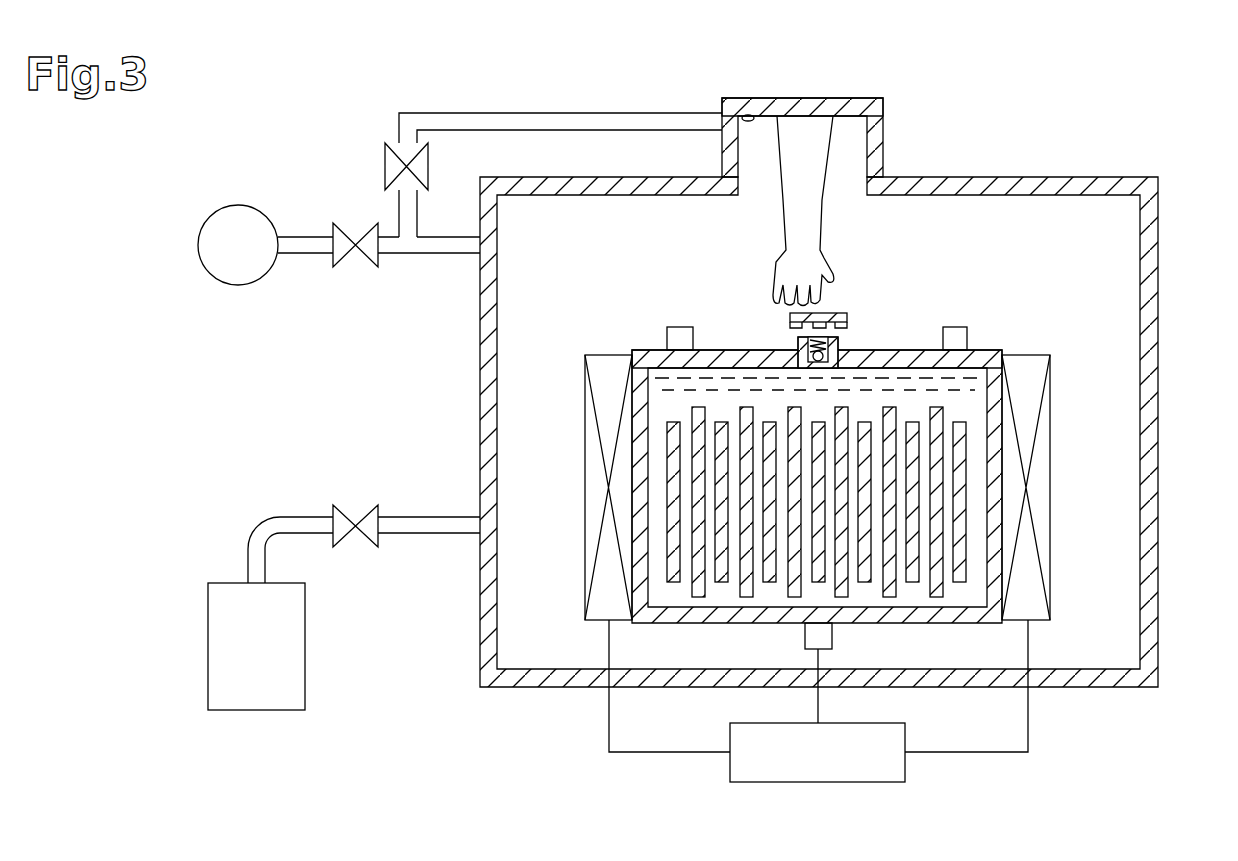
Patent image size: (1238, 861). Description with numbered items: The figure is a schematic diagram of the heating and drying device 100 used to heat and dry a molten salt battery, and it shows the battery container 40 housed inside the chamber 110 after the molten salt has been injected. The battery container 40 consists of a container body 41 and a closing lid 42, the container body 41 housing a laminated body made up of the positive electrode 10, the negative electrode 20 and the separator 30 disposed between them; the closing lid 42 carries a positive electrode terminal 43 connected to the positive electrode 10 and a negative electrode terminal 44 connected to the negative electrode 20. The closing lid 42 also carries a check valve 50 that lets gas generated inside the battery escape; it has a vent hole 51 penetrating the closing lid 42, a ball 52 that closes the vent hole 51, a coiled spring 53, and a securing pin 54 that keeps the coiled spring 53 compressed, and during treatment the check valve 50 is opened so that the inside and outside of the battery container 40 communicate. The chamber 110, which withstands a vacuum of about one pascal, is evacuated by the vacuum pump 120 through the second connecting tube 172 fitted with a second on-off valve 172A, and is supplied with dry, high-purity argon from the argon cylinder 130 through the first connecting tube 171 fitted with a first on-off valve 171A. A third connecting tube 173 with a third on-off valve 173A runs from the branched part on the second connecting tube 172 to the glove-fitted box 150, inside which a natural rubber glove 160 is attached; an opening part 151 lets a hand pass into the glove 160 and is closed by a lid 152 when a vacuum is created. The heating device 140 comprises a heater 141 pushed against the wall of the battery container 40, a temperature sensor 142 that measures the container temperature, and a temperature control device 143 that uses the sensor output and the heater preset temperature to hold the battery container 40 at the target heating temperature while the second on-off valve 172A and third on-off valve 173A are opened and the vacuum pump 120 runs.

The heating and drying device 100 is at (265, 88).
The chamber 110 is at (1160, 430).
The vacuum pump 120 is at (238, 285).
The argon cylinder 130 is at (220, 583).
The heating device 140 is at (802, 592).
The heater 141 is at (582, 585).
The temperature sensor 142 is at (832, 636).
The temperature control device 143 is at (818, 782).
The glove-fitted box 150 is at (886, 148).
The opening part 151 is at (746, 116).
The lid 152 is at (855, 98).
The glove 160 is at (835, 238).
The first connecting tube 171 is at (428, 515).
The first on-off valve 171A is at (343, 511).
The second connecting tube 172 is at (428, 255).
The second on-off valve 172A is at (373, 262).
The third connecting tube 173 is at (500, 110).
The third on-off valve 173A is at (387, 156).
The positive electrode 10 is at (682, 582).
The negative electrode 20 is at (720, 582).
The separator 30 is at (698, 598).
The battery container 40 is at (839, 489).
The container body 41 is at (637, 624).
The closing lid 42 is at (640, 350).
The positive electrode terminal 43 is at (677, 327).
The negative electrode terminal 44 is at (959, 327).
The check valve 50 is at (838, 338).
The vent hole 51 is at (838, 345).
The ball 52 is at (818, 362).
The coiled spring 53 is at (799, 345).
The securing pin 54 is at (840, 313).